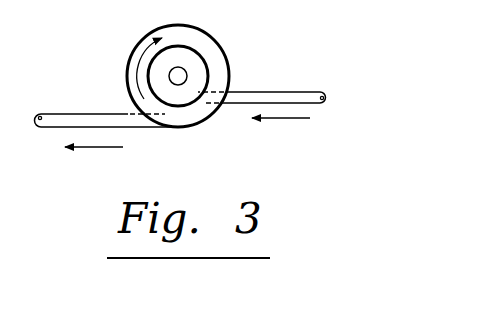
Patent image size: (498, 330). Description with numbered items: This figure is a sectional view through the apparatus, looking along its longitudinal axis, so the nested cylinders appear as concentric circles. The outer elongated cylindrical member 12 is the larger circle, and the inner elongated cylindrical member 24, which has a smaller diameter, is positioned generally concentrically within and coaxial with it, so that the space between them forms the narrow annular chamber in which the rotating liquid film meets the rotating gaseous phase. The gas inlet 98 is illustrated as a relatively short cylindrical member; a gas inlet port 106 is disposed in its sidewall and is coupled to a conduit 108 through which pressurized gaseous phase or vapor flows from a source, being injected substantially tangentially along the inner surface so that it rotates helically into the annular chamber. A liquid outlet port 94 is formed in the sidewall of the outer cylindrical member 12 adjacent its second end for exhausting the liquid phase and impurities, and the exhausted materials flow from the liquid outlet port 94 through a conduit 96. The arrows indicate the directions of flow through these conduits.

The outer elongated cylindrical member 12 is at (223, 55).
The inner elongated cylindrical member 24 is at (179, 67).
The liquid outlet port 94 is at (149, 124).
The conduit 96 is at (102, 113).
The gas inlet 98 is at (146, 73).
The gas inlet port 106 is at (213, 98).
The conduit 108 is at (275, 93).